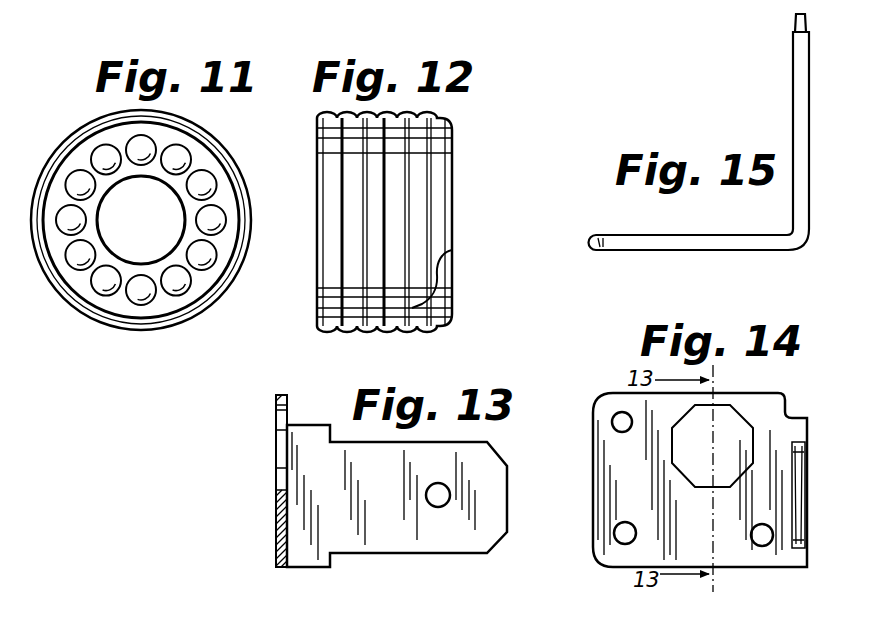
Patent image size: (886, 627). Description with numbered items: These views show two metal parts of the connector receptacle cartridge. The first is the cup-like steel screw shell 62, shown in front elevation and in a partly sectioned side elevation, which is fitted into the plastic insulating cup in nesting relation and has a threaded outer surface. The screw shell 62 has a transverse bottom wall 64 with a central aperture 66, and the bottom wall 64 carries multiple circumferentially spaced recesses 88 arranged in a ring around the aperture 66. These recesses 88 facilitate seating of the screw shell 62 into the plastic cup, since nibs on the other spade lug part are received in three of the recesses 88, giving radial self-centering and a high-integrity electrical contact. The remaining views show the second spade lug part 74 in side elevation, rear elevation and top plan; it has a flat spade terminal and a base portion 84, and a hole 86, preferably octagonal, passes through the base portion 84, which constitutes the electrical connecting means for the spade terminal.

In FIG. 11, the screw shell 62 is at (170, 338).
In FIG. 12, the screw shell 62 is at (458, 207).
In FIG. 11, the bottom wall 64 is at (200, 272).
In FIG. 12, the bottom wall 64 is at (458, 242).
In FIG. 11, the aperture 66 is at (141, 220).
In FIG. 15, the second spade lug part 74 is at (798, 97).
In FIG. 13, the second spade lug part 74 is at (402, 540).
In FIG. 14, the second spade lug part 74 is at (808, 474).
In FIG. 15, the base portion 84 is at (683, 241).
In FIG. 13, the base portion 84 is at (278, 518).
In FIG. 14, the base portion 84 is at (610, 482).
In FIG. 13, the hole 86 is at (282, 447).
In FIG. 14, the hole 86 is at (746, 440).
In FIG. 11, the recesses 88 is at (80, 258).
In FIG. 12, the recesses 88 is at (448, 292).